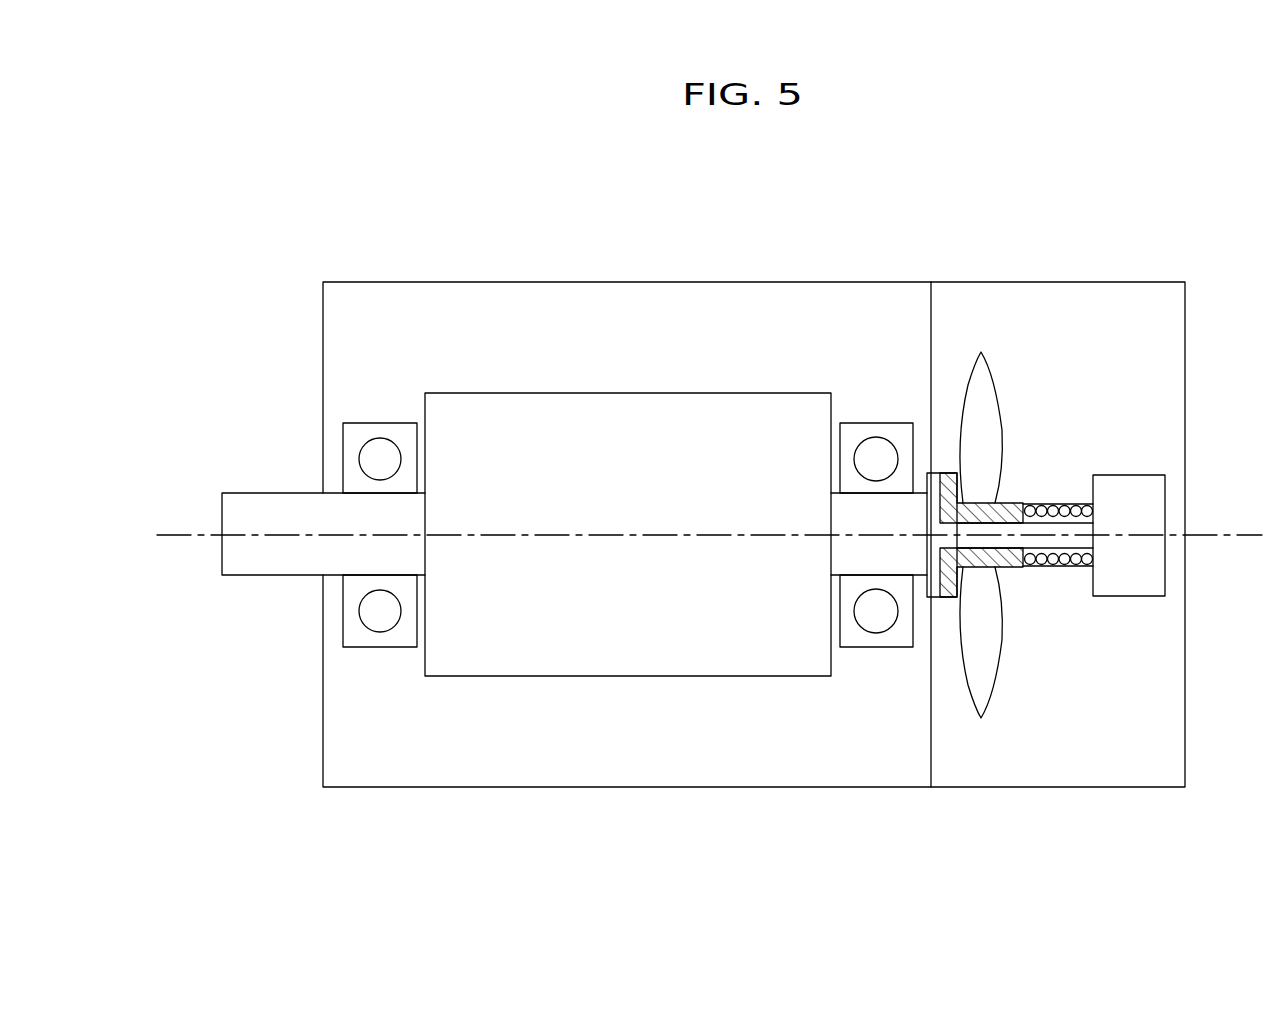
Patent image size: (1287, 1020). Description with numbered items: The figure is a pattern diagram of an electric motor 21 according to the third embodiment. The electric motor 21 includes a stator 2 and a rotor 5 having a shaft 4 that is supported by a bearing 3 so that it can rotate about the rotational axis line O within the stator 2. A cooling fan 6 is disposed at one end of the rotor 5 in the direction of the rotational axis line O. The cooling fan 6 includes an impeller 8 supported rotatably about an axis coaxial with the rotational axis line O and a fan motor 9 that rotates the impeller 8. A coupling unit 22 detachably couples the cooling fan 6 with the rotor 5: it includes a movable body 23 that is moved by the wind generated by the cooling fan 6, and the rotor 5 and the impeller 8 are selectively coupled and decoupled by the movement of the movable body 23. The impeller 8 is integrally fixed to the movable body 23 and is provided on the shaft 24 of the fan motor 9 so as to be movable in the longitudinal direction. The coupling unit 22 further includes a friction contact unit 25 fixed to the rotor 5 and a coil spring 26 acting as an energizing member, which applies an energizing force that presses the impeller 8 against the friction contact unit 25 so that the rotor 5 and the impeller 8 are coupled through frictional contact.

The rotational axis line O is at (172, 533).
The stator 2 is at (543, 282).
The bearing 3 is at (373, 423).
The shaft 4 is at (857, 647).
The rotor 5 is at (652, 676).
The cooling fan 6 is at (1090, 400).
The impeller 8 is at (981, 352).
The fan motor 9 is at (1165, 500).
The electric motor 21 is at (1162, 204).
The coupling unit 22 is at (940, 479).
The movable body 23 is at (950, 597).
The shaft 24 is at (1060, 504).
The friction contact unit 25 is at (927, 512).
The coil spring 26 is at (1072, 567).